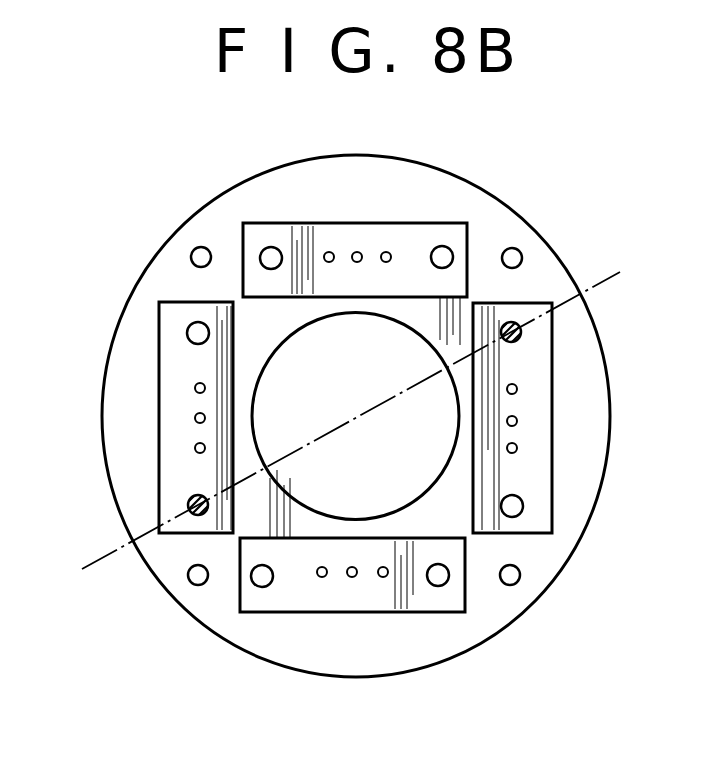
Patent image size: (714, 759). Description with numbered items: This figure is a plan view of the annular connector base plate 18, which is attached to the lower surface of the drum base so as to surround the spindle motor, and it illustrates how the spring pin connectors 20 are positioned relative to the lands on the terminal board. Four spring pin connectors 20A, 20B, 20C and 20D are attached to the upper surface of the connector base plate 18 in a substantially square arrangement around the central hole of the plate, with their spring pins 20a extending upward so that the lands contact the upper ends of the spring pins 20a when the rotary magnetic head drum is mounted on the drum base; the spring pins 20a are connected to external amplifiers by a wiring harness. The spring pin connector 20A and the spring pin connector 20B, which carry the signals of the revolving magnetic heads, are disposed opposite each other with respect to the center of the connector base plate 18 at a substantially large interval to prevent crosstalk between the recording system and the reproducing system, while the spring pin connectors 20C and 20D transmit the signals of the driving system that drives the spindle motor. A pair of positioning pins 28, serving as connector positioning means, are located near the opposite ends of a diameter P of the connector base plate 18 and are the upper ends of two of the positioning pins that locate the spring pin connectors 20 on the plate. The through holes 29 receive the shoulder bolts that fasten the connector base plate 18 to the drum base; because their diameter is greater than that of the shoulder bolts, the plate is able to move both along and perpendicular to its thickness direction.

The connector base plate 18 is at (255, 204).
The spring pin connector 20 is at (352, 419).
The spring pin connector 20A is at (159, 362).
The spring pin connector 20B is at (556, 462).
The spring pin connector 20C is at (293, 613).
The spring pin connector 20D is at (410, 222).
The spring pins 20a is at (386, 252).
The positioning pins 28 is at (187, 505).
The through holes 29 is at (200, 253).
The diameter P is at (83, 544).